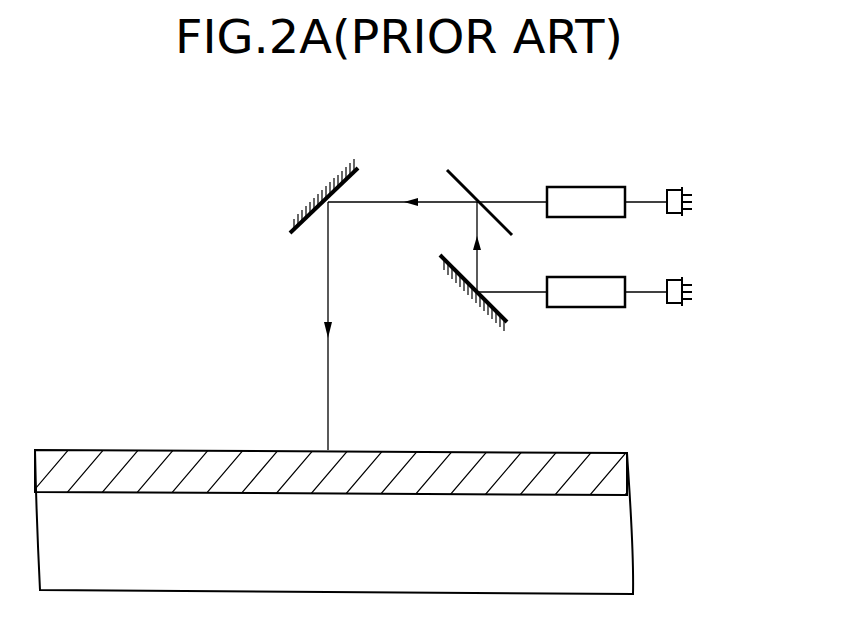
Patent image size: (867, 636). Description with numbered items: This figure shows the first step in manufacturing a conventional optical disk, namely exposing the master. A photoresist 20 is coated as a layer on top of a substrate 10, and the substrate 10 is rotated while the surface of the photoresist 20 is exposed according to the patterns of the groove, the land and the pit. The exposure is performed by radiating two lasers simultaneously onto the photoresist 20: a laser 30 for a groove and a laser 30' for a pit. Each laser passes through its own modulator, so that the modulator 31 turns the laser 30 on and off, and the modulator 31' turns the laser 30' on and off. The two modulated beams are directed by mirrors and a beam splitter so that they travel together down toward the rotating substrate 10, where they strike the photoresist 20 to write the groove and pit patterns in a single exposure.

The substrate 10 is at (615, 553).
The photoresist 20 is at (607, 483).
The laser for a groove 30 is at (658, 152).
The laser for a pit 30' is at (669, 349).
The modulator 31 is at (586, 165).
The modulator 31' is at (584, 337).